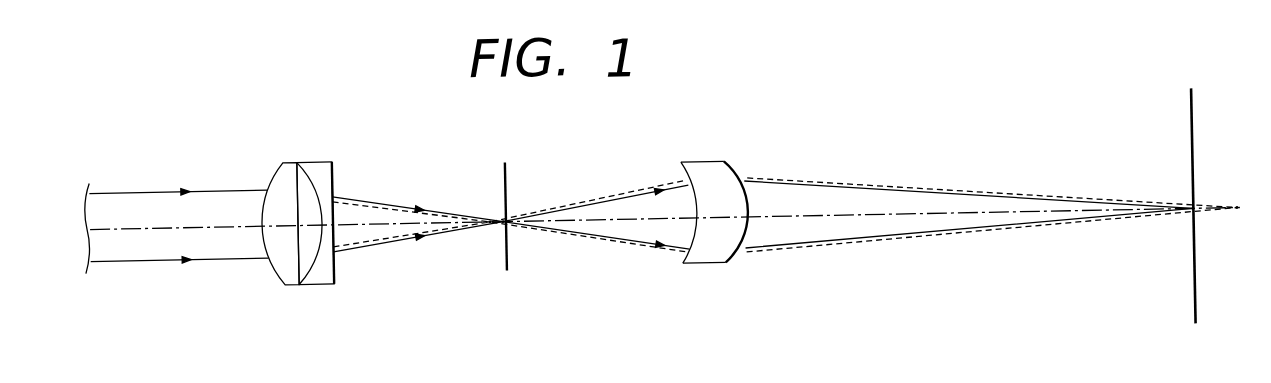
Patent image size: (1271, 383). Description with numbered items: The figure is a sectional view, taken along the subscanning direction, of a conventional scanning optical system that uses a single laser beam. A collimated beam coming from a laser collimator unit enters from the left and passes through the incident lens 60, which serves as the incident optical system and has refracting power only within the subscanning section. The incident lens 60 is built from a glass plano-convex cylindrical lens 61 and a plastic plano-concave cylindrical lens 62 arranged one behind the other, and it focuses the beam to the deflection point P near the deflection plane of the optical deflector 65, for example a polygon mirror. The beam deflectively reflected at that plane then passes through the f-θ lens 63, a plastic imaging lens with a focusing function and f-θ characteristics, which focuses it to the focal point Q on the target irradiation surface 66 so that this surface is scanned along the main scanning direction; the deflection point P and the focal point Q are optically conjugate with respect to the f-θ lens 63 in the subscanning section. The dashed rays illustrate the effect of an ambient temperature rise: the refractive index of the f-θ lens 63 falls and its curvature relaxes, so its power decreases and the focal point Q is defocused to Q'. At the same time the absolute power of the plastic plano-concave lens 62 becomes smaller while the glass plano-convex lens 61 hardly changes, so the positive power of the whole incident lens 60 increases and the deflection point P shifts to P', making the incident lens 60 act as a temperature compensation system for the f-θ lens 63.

The incident lens 60 is at (305, 216).
The glass plano-convex cylindrical lens 61 is at (289, 156).
The plastic plano-concave cylindrical lens 62 is at (325, 156).
The f-θ lens 63 is at (711, 258).
The optical deflector 65 is at (508, 171).
The target irradiation surface 66 is at (1197, 111).
The deflection point P is at (486, 261).
The defocused deflection point P' is at (461, 261).
The focal point Q is at (1168, 246).
The defocused focal point Q' is at (1232, 248).